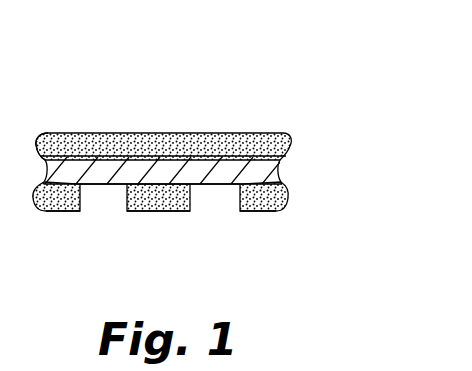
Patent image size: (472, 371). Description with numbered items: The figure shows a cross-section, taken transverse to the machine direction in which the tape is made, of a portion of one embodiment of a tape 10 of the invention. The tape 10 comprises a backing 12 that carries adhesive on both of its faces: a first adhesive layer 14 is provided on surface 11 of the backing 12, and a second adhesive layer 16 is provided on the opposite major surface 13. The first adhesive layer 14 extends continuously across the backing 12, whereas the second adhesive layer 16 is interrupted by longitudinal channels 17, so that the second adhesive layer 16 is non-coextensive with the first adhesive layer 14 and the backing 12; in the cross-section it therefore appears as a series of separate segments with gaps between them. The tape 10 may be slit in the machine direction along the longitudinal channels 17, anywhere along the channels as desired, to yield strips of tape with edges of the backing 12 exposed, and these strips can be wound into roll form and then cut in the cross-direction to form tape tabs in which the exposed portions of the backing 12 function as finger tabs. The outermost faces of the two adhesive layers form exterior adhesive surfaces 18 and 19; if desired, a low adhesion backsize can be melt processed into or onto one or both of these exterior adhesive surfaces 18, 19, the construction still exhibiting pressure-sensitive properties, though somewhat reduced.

The tape 10 is at (312, 62).
The surface 11 is at (289, 137).
The backing 12 is at (274, 166).
The major surface 13 is at (284, 200).
The first adhesive layer 14 is at (234, 133).
The second adhesive layer 16 is at (53, 212).
The longitudinal channels 17 is at (104, 196).
The exterior adhesive surface 18 is at (43, 133).
The exterior adhesive surface 19 is at (66, 212).